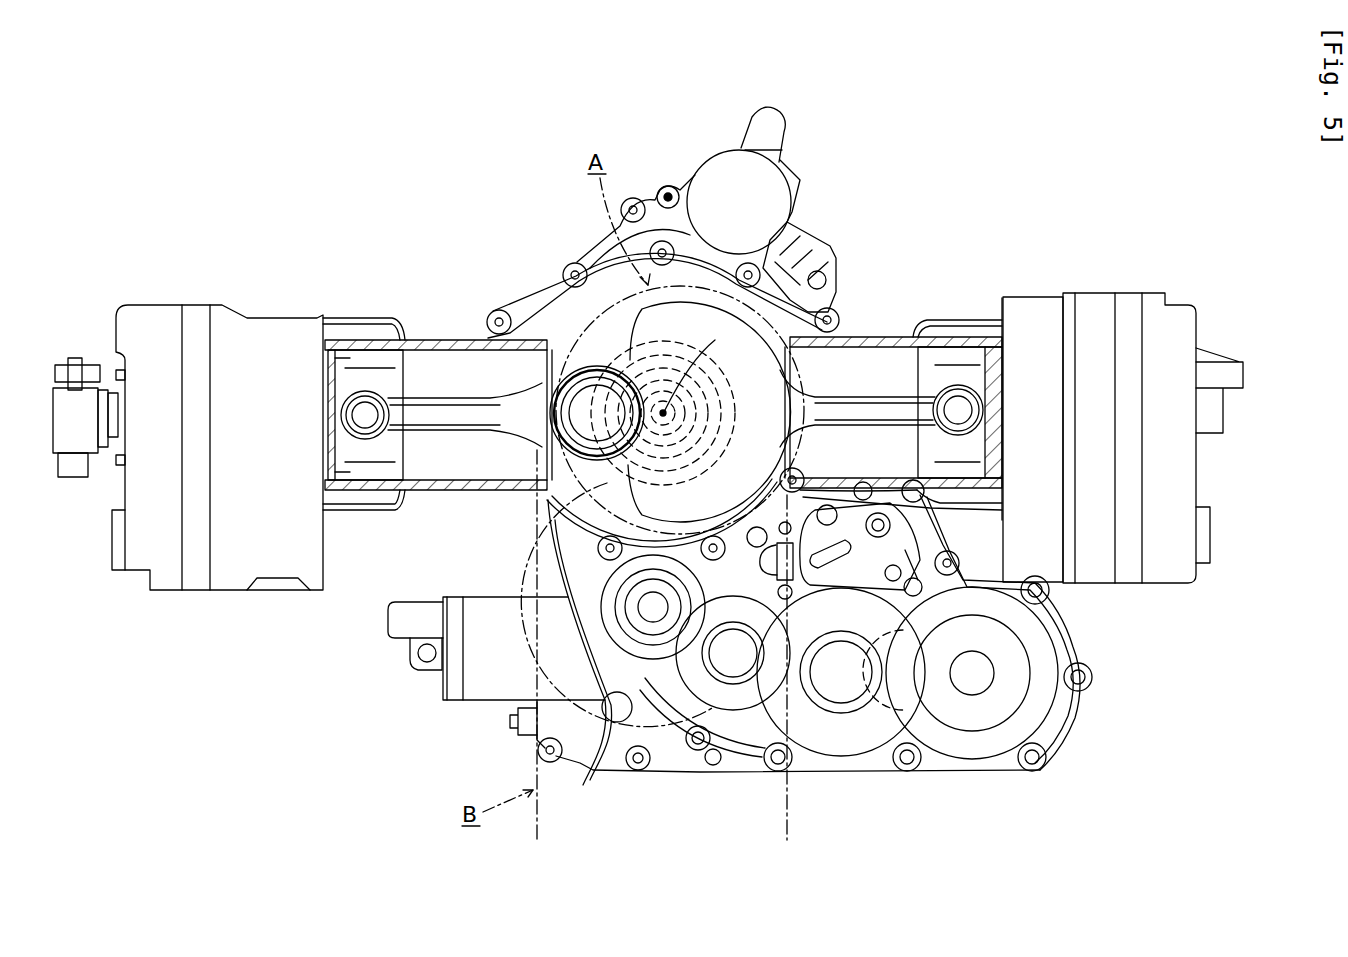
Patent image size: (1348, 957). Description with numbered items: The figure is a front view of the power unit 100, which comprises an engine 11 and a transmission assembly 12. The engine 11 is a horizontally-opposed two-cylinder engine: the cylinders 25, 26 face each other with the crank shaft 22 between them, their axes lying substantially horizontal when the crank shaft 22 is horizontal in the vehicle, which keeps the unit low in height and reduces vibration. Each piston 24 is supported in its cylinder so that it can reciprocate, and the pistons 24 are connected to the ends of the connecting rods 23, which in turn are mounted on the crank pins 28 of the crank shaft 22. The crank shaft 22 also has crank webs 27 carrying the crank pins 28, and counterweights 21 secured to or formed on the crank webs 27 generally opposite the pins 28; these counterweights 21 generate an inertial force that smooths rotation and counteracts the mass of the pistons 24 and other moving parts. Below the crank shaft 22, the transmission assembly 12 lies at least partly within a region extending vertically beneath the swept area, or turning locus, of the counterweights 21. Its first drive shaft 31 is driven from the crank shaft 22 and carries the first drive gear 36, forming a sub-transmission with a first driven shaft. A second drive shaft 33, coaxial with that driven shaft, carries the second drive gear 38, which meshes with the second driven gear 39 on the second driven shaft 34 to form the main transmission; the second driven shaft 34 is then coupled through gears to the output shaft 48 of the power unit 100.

The power unit 100 is at (844, 212).
The engine 11 is at (511, 248).
The transmission assembly 12 is at (745, 768).
The counterweights 21 is at (753, 350).
The crank shaft 22 is at (652, 275).
The connecting rods 23 is at (437, 435).
The pistons 24 is at (412, 337).
The cylinder 25 is at (455, 337).
The cylinder 26 is at (893, 332).
The crank webs 27 is at (673, 318).
The crank pins 28 is at (593, 397).
The first drive shaft 31 is at (597, 700).
The second drive shaft 33 is at (730, 665).
The second driven shaft 34 is at (848, 688).
The first drive gear 36 is at (653, 612).
The second drive gear 38 is at (790, 775).
The second driven gear 39 is at (843, 700).
The output shaft 48 is at (972, 690).